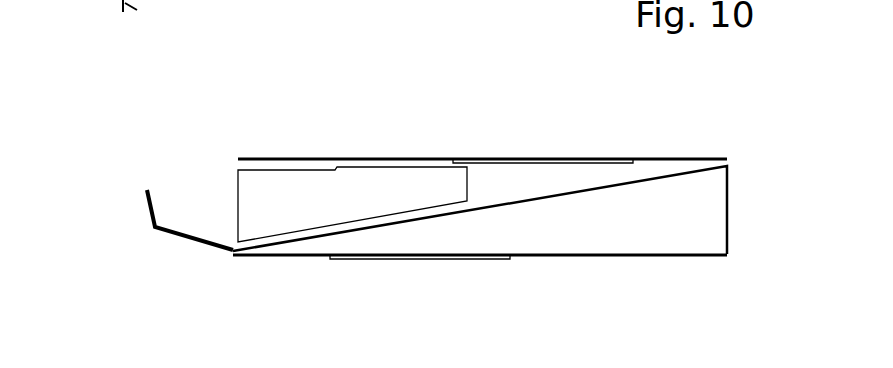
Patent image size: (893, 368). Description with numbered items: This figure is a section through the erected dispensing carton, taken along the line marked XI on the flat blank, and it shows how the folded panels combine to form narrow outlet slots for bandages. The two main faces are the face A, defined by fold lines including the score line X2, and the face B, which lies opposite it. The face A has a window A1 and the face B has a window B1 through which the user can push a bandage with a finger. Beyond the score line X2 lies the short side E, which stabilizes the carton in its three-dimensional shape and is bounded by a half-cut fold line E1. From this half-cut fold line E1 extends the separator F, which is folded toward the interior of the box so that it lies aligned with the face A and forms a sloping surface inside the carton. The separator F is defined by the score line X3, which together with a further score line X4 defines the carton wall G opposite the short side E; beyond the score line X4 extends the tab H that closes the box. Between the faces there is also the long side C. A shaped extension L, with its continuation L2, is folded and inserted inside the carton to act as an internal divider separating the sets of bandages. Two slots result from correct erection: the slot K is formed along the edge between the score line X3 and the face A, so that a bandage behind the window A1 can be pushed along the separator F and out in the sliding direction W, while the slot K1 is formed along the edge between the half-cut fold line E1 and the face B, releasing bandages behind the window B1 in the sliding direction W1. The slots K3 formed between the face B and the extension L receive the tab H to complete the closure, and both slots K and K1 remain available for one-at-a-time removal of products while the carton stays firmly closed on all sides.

The score line X3 is at (233, 250).
The slot K3 is at (238, 165).
The face B is at (325, 158).
The continuation L2 is at (383, 182).
The section line XI is at (430, 116).
The sliding direction W1 is at (556, 143).
The long side C is at (572, 177).
The window B1 is at (615, 158).
The slot K1 is at (727, 160).
The half-cut fold line E1 is at (722, 170).
The short side E is at (727, 203).
The tab H is at (153, 202).
The shaped extension L is at (238, 205).
The score line X4 is at (155, 228).
The carton wall G is at (180, 235).
The slot K is at (230, 257).
The sliding direction W is at (335, 270).
The window A1 is at (370, 258).
The face A is at (572, 258).
The separator F is at (634, 182).
The score line X2 is at (727, 254).